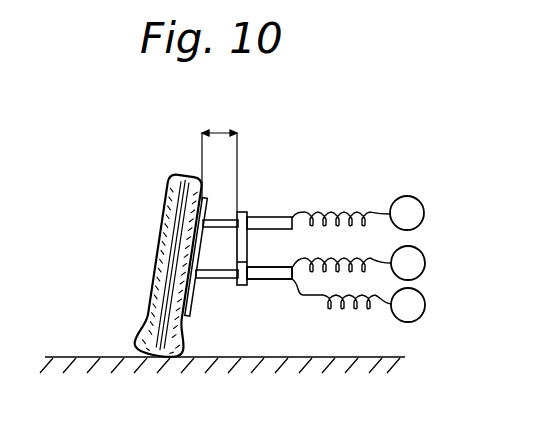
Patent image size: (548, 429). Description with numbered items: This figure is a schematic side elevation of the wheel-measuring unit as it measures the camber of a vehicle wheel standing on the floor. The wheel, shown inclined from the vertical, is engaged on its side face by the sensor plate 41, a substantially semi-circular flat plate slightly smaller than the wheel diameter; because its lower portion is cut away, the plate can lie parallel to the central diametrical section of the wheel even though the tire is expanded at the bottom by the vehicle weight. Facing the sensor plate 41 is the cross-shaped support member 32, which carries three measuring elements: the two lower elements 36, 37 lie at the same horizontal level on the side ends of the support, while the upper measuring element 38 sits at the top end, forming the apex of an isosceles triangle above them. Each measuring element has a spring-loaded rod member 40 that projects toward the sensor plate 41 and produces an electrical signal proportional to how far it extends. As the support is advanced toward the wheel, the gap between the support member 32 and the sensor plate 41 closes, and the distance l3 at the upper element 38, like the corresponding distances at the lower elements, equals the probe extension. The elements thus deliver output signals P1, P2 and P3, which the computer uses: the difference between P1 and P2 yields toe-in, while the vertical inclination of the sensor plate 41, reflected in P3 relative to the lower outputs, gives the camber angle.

The cross-shaped support member 32 is at (242, 211).
The measuring element 36 is at (290, 280).
The measuring element 37 is at (269, 273).
The measuring element 38 is at (289, 216).
The rod member 40 is at (222, 279).
The sensor plate 41 is at (186, 316).
The distance l3 is at (219, 158).
The output signal P1 is at (408, 305).
The output signal P2 is at (408, 263).
The output signal P3 is at (407, 213).